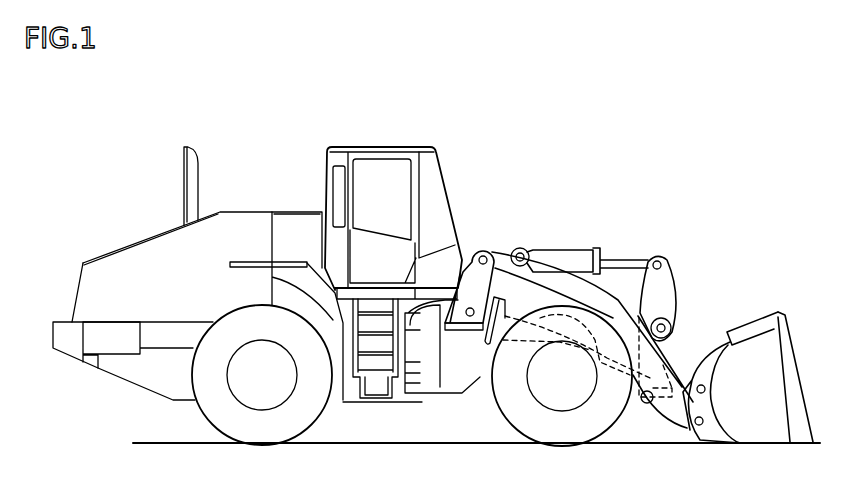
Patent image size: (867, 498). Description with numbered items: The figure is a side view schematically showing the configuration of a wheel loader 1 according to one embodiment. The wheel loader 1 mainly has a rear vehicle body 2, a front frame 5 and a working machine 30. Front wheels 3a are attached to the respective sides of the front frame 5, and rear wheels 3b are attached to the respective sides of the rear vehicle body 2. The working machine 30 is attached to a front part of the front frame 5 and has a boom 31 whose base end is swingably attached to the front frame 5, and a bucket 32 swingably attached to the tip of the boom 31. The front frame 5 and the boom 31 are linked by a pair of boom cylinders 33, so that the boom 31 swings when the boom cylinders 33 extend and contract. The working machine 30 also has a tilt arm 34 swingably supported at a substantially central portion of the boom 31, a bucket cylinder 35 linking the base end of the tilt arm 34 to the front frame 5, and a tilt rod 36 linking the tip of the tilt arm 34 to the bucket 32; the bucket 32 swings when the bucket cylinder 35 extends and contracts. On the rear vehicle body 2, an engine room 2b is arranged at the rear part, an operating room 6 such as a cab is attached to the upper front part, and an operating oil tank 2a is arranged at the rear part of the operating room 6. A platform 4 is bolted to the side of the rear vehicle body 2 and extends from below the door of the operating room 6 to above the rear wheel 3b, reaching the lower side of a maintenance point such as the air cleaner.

The wheel loader 1 is at (462, 118).
The rear vehicle body 2 is at (157, 370).
The operating oil tank 2a is at (302, 223).
The engine room 2b is at (118, 280).
The front wheels 3a is at (563, 428).
The rear wheels 3b is at (262, 428).
The platform 4 is at (287, 270).
The front frame 5 is at (478, 377).
The operating room 6 is at (385, 147).
The working machine 30 is at (683, 299).
The boom 31 is at (613, 312).
The bucket 32 is at (757, 393).
The boom cylinders 33 is at (503, 307).
The tilt arm 34 is at (655, 293).
The bucket cylinder 35 is at (580, 262).
The tilt rod 36 is at (672, 400).